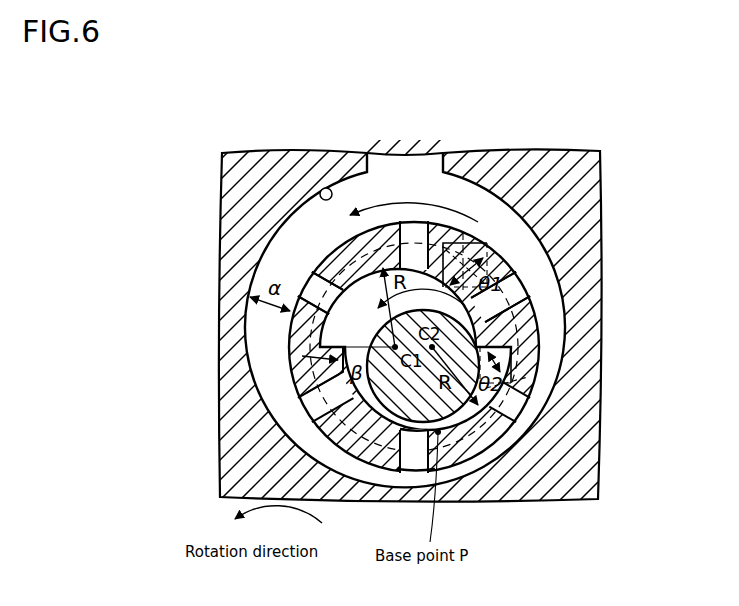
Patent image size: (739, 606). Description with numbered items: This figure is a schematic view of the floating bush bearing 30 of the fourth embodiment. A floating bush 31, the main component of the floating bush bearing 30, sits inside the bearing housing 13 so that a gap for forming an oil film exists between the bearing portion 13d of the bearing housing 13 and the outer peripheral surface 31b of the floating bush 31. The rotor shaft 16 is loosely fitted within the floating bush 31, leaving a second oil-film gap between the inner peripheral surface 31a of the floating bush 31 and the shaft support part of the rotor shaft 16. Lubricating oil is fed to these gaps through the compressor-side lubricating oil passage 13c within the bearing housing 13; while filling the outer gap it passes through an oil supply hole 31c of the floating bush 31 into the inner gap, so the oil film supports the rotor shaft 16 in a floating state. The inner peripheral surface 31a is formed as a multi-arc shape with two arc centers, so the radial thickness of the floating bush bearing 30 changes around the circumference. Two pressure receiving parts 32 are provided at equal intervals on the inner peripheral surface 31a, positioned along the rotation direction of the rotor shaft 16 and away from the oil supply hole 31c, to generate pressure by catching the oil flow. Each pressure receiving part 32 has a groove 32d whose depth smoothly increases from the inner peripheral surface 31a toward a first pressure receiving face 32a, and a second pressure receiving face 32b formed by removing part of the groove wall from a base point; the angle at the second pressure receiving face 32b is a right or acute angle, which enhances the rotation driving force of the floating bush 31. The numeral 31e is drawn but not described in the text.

The bearing housing 13 is at (553, 193).
The compressor-side lubricating oil passage 13c is at (390, 174).
The bearing portion 13d is at (325, 187).
The rotor shaft 16 is at (445, 333).
The floating bush bearing 30 is at (480, 86).
The floating bush 31 is at (297, 233).
The inner peripheral surface 31a is at (460, 413).
The outer peripheral surface 31b is at (487, 243).
The oil supply hole 31c is at (482, 281).
The vane tip 31e is at (528, 377).
The pressure receiving part 32 is at (540, 400).
The first pressure receiving face 32a is at (463, 232).
The second pressure receiving face 32b is at (513, 370).
The groove 32d is at (505, 262).